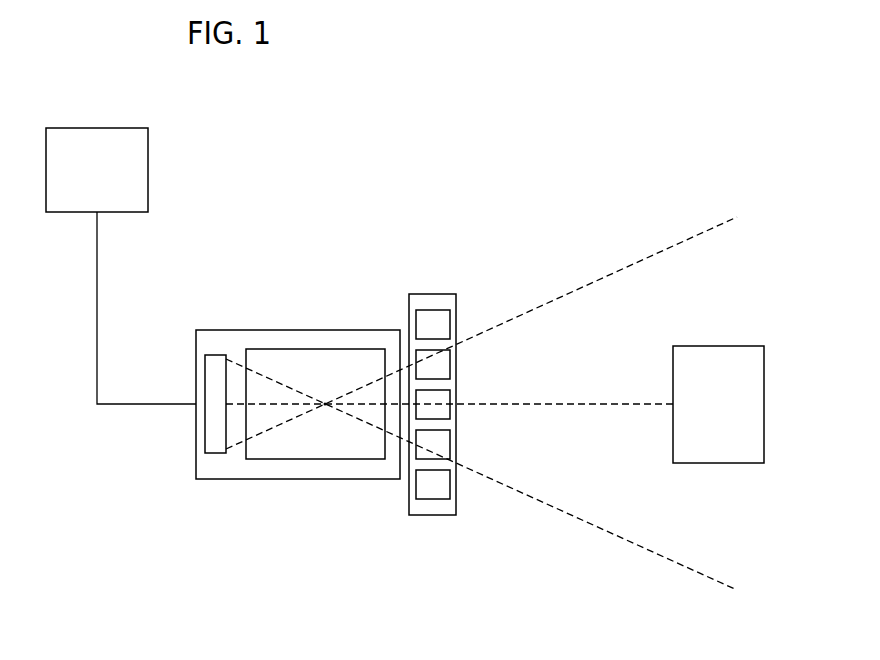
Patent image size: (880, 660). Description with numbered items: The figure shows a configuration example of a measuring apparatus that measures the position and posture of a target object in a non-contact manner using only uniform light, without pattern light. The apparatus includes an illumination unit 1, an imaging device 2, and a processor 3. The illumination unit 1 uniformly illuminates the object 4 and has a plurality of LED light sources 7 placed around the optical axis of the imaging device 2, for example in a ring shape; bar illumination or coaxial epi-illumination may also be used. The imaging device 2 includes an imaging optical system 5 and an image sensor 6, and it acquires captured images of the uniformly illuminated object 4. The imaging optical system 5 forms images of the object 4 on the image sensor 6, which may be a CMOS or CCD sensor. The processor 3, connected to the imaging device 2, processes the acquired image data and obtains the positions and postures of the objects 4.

The illumination unit 1 is at (430, 515).
The imaging device 2 is at (240, 330).
The processor 3 is at (100, 128).
The object 4 is at (764, 380).
The imaging optical system 5 is at (207, 453).
The image sensor 6 is at (308, 459).
The LED light source 7 is at (431, 317).